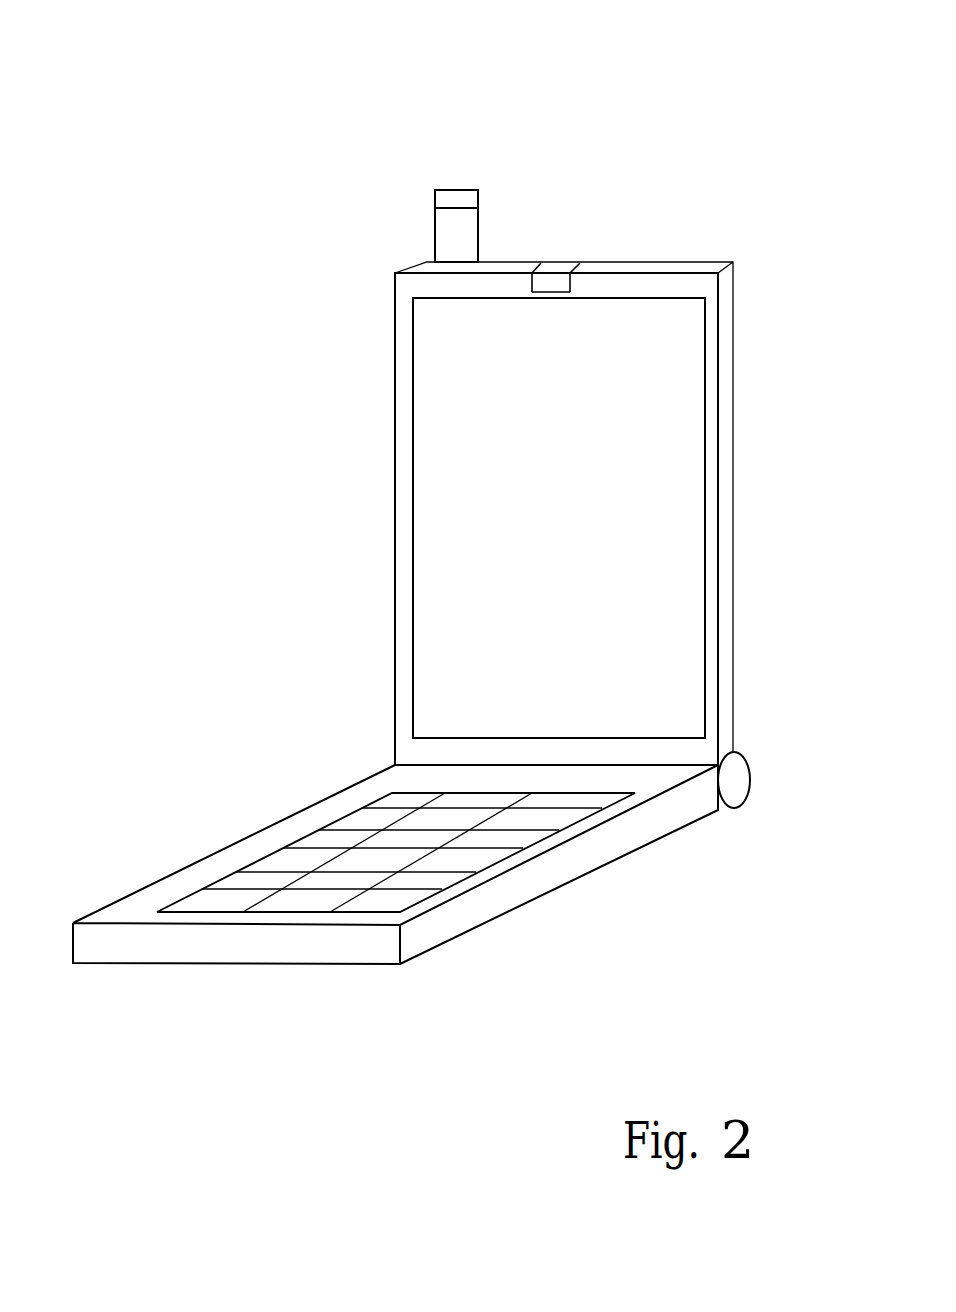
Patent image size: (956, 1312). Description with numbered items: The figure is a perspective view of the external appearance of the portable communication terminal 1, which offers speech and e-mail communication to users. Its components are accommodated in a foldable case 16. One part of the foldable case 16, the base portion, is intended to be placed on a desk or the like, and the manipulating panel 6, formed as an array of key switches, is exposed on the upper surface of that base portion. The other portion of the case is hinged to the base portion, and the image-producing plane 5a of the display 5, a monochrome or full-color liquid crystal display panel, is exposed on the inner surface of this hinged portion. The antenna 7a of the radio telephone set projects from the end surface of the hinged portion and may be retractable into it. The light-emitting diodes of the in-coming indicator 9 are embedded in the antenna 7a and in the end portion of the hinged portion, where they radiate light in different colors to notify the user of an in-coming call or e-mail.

The portable communication terminal 1 is at (778, 111).
The display 5 is at (712, 340).
The image-producing plane 5a is at (642, 410).
The manipulating panel 6 is at (610, 792).
The antenna 7a is at (442, 224).
The in-coming indicator 9 is at (470, 198).
The foldable case 16 is at (343, 790).